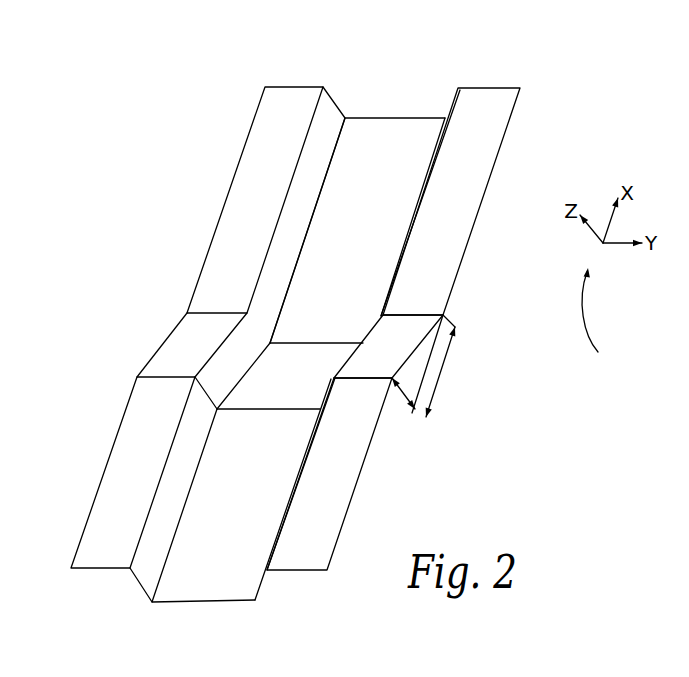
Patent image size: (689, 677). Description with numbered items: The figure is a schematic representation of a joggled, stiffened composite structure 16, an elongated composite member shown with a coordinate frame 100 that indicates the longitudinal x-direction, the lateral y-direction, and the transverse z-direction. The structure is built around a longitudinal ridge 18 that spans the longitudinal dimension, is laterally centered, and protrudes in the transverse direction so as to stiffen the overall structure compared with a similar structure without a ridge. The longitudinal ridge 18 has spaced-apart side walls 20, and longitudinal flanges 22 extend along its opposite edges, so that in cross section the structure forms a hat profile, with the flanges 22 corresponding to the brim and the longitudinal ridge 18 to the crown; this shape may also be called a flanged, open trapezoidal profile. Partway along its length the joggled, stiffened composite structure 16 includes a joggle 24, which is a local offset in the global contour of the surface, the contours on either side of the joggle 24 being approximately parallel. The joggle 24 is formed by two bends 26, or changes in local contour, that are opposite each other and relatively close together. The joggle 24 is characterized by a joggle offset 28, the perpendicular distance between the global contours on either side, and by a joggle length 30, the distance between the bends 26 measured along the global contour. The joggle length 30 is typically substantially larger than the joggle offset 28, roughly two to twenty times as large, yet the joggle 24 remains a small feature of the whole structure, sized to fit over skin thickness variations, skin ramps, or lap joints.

The joggled, stiffened composite structure 16 is at (290, 316).
The longitudinal ridge 18 is at (362, 118).
The side walls 20 is at (340, 110).
The longitudinal flanges 22 is at (283, 87).
The joggle 24 is at (146, 337).
The bends 26 is at (424, 314).
The joggle offset 28 is at (403, 393).
The joggle length 30 is at (445, 357).
The coordinate frame 100 is at (600, 325).